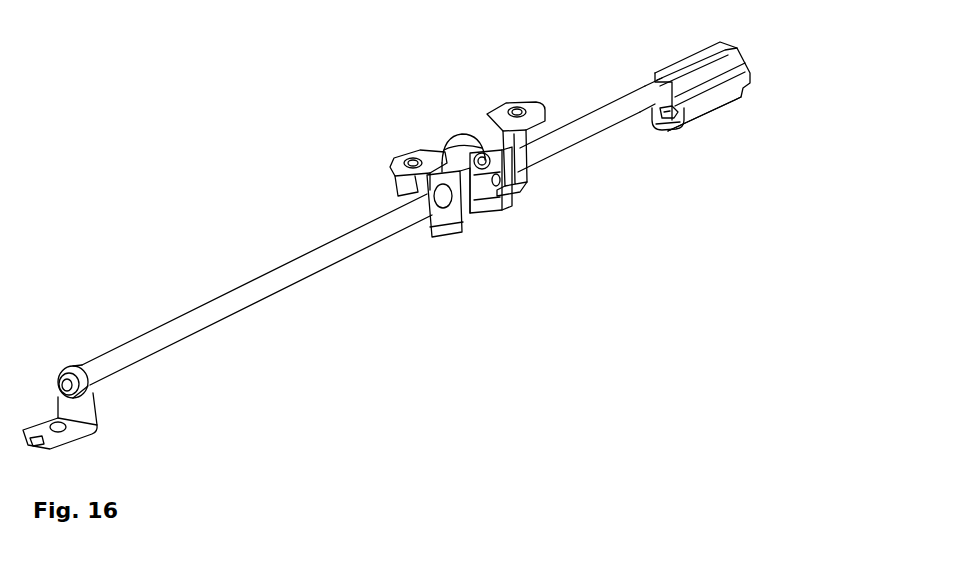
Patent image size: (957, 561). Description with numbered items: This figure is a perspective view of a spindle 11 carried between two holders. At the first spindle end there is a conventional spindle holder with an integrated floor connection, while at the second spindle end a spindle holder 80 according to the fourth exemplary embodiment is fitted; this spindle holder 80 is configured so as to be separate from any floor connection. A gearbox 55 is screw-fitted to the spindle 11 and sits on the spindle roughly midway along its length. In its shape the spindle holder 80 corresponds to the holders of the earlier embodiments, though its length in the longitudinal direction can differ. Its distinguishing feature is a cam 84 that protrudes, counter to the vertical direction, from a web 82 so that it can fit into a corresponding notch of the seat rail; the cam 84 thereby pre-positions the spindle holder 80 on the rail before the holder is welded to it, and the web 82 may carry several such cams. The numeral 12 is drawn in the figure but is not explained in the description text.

The spindle 11 is at (232, 302).
The rod end 12 is at (667, 87).
The gearbox 55 is at (503, 205).
The spindle holder 80 is at (732, 82).
The web 82 is at (663, 113).
The cam 84 is at (668, 128).